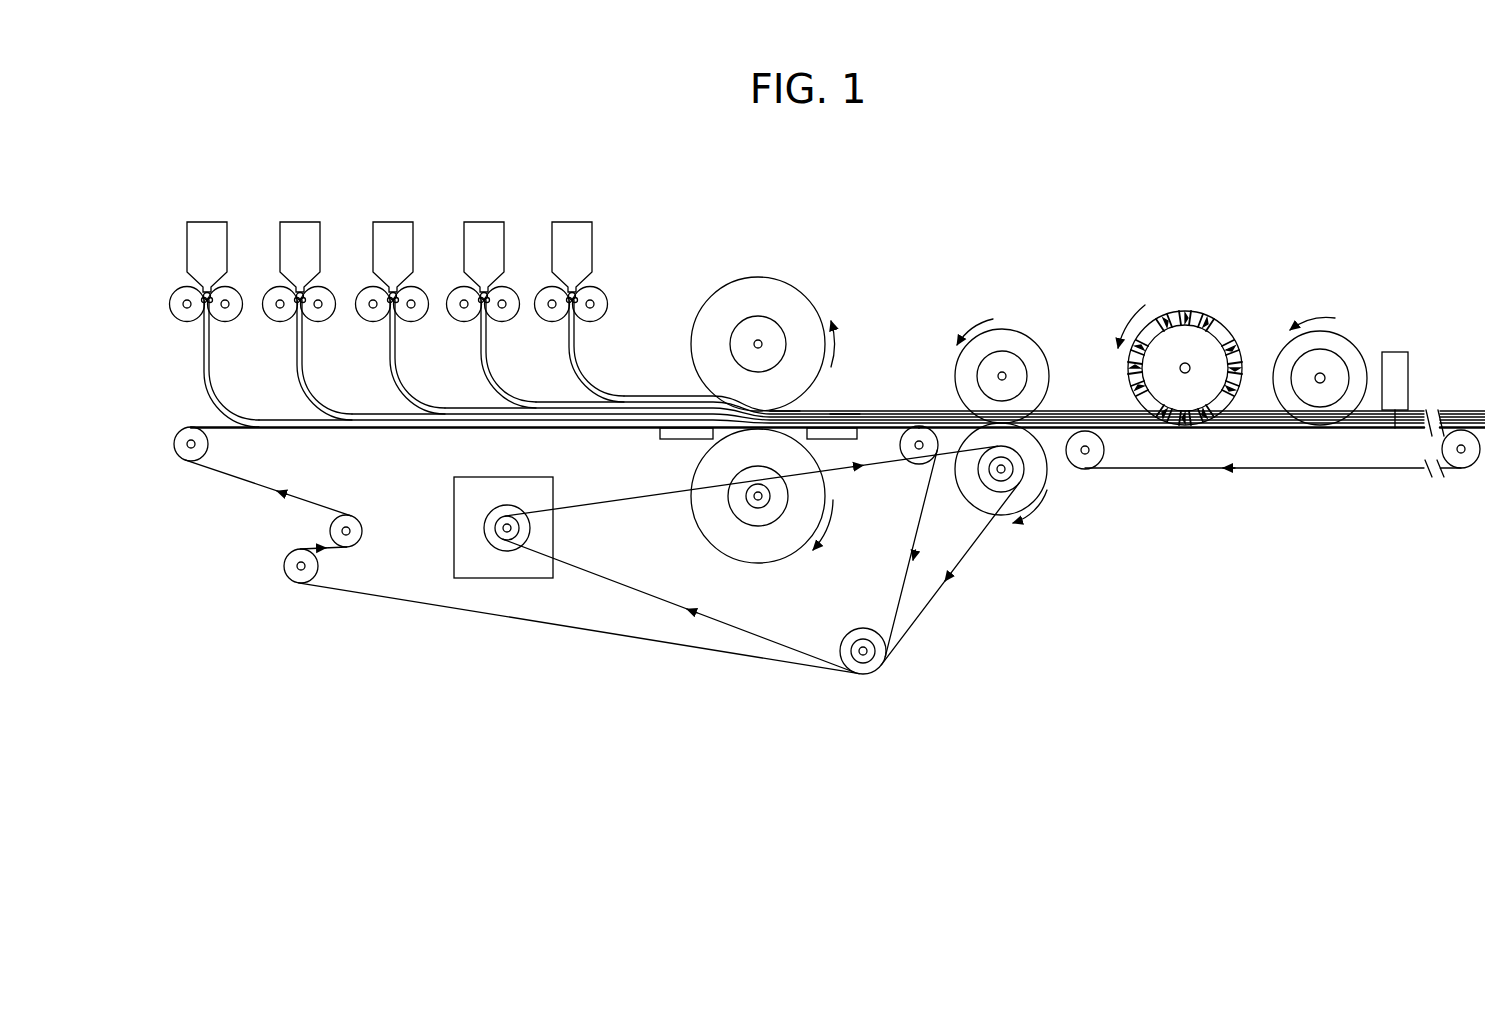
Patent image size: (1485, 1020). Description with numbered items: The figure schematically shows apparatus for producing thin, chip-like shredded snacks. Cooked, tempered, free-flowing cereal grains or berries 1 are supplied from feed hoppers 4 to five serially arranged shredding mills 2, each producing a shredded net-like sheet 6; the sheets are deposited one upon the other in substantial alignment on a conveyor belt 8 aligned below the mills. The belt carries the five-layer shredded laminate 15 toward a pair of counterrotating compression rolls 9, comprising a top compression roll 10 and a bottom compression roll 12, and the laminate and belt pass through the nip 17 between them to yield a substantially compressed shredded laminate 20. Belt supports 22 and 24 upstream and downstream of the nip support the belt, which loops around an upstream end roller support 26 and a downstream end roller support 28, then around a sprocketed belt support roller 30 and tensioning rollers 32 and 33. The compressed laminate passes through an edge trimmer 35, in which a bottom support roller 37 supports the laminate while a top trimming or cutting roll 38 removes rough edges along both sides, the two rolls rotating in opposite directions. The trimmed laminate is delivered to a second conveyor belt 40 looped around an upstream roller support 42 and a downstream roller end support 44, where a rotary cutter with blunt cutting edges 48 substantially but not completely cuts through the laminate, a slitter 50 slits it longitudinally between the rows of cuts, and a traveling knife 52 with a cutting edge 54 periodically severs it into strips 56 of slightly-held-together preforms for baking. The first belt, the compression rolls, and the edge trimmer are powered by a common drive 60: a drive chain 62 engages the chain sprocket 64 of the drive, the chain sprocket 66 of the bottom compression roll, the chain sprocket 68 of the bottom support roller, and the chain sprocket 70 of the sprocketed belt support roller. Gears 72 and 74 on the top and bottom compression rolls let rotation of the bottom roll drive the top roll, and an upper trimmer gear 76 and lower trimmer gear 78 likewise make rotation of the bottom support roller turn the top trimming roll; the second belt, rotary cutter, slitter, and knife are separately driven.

The cereal grains or berries 1 is at (195, 285).
The shredding mills 2 is at (228, 321).
The feed hoppers 4 is at (208, 222).
The shredded net-like sheets 6 is at (204, 364).
The conveyor belt 8 is at (205, 426).
The pair of counterrotating compression rolls 9 is at (773, 275).
The top compression roll 10 is at (725, 286).
The bottom compression roll 12 is at (705, 512).
The five-layer shredded laminate 15 is at (668, 404).
The nip 17 is at (806, 404).
The compressed shredded laminate 20 is at (843, 418).
The belt support 22 is at (685, 440).
The belt support 24 is at (837, 439).
The upstream end roller support 26 is at (185, 459).
The downstream end roller support 28 is at (919, 436).
The sprocketed belt support roller 30 is at (877, 668).
The tensioning roller 32 is at (288, 571).
The tensioning roller 33 is at (330, 524).
The edge trimmer 35 is at (1033, 318).
The bottom support roller 37 is at (1045, 485).
The top trimming or cutting roll 38 is at (1036, 343).
The second conveyor belt 40 is at (1122, 432).
The upstream roller support 42 is at (1082, 463).
The downstream roller end support 44 is at (1465, 469).
The blunt cutting edges 48 is at (1212, 313).
The slitter 50 is at (1340, 345).
The traveling knife 52 is at (1396, 362).
The cutting edge 54 is at (1418, 414).
The strips 56 is at (1433, 418).
The common drive 60 is at (468, 487).
The drive chain 62 is at (596, 502).
The chain sprocket 64 is at (494, 524).
The chain sprocket 66 is at (745, 508).
The chain sprocket 68 is at (990, 478).
The chain sprocket 70 is at (858, 630).
The gear 72 is at (774, 322).
The gear 74 is at (768, 527).
The upper trimmer gear 76 is at (1002, 362).
The lower trimmer gear 78 is at (1004, 482).